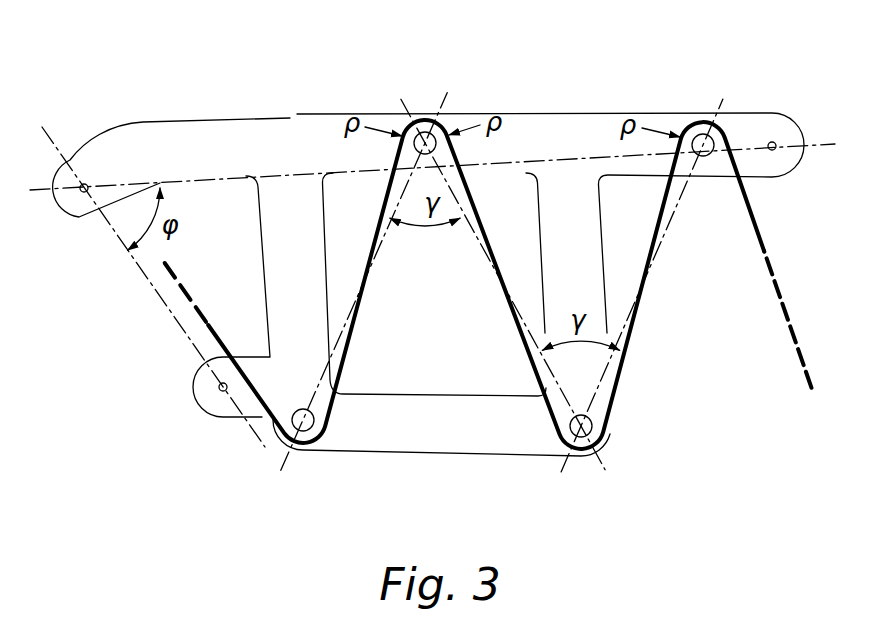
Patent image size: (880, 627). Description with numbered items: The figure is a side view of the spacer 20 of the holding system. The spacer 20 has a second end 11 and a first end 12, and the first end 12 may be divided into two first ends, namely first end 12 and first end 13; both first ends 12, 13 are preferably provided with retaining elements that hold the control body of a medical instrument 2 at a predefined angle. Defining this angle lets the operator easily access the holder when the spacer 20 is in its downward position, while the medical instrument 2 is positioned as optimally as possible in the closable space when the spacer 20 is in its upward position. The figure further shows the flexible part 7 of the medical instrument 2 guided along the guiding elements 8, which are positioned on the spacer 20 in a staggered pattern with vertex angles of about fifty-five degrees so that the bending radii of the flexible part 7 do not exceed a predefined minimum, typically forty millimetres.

The medical instrument 2 is at (356, 268).
The flexible part 7 is at (768, 228).
The guiding elements 8 is at (425, 132).
The second end 11 is at (774, 142).
The first end 12 is at (70, 213).
The first end 13 is at (196, 400).
The spacer 20 is at (290, 148).